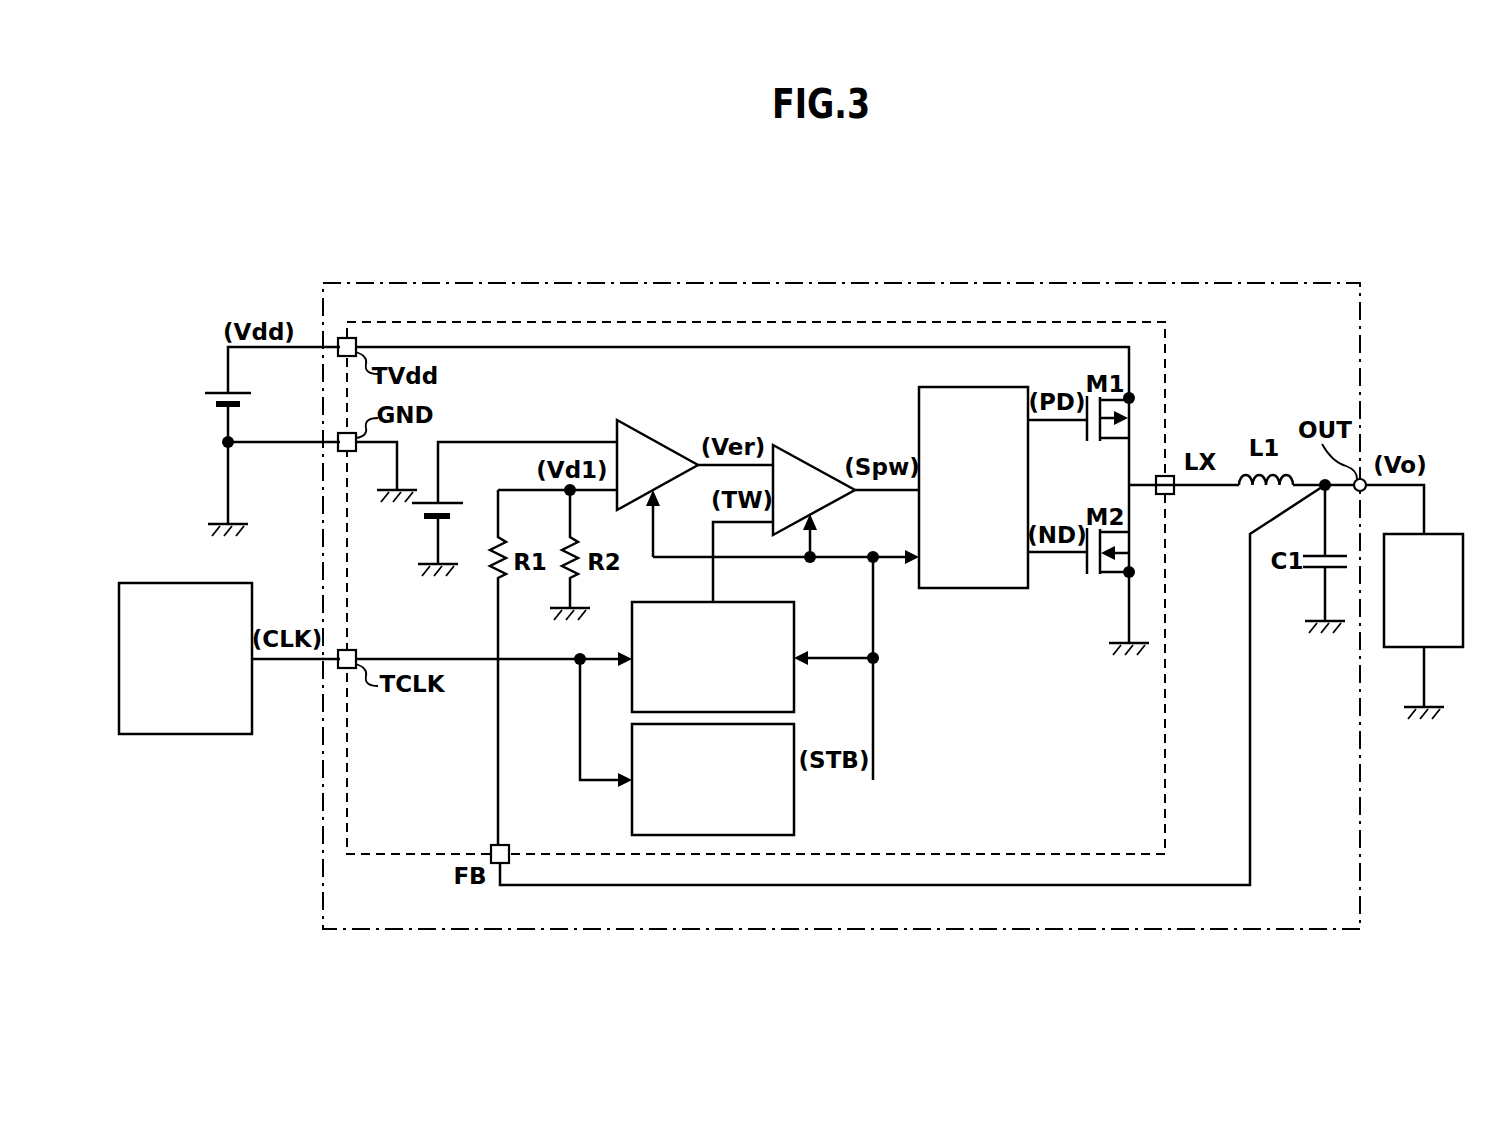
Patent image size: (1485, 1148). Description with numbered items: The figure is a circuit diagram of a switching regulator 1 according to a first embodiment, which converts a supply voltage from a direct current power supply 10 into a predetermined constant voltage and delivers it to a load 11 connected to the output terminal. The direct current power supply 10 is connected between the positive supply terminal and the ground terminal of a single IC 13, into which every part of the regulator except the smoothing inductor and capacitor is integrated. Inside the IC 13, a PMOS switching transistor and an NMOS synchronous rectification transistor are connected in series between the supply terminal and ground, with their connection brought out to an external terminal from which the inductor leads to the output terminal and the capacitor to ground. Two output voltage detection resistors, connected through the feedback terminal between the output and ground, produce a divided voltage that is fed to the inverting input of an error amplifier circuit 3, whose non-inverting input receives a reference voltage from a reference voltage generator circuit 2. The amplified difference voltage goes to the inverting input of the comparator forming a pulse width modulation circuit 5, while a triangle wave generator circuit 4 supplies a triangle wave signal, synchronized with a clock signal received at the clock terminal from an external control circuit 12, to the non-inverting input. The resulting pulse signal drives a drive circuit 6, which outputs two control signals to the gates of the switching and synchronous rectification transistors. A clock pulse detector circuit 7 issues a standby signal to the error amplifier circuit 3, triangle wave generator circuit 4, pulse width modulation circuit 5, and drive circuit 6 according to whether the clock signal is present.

The switching regulator 1 is at (895, 284).
The reference voltage generator circuit 2 is at (452, 503).
The error amplifier circuit 3 is at (655, 441).
The triangle wave generator circuit 4 is at (794, 618).
The PWM circuit 5 is at (800, 460).
The drive circuit 6 is at (980, 588).
The clock pulse detector circuit 7 is at (794, 806).
The direct current power supply 10 is at (212, 392).
The load 11 is at (1441, 534).
The external control circuit 12 is at (168, 583).
The IC 13 is at (1171, 371).